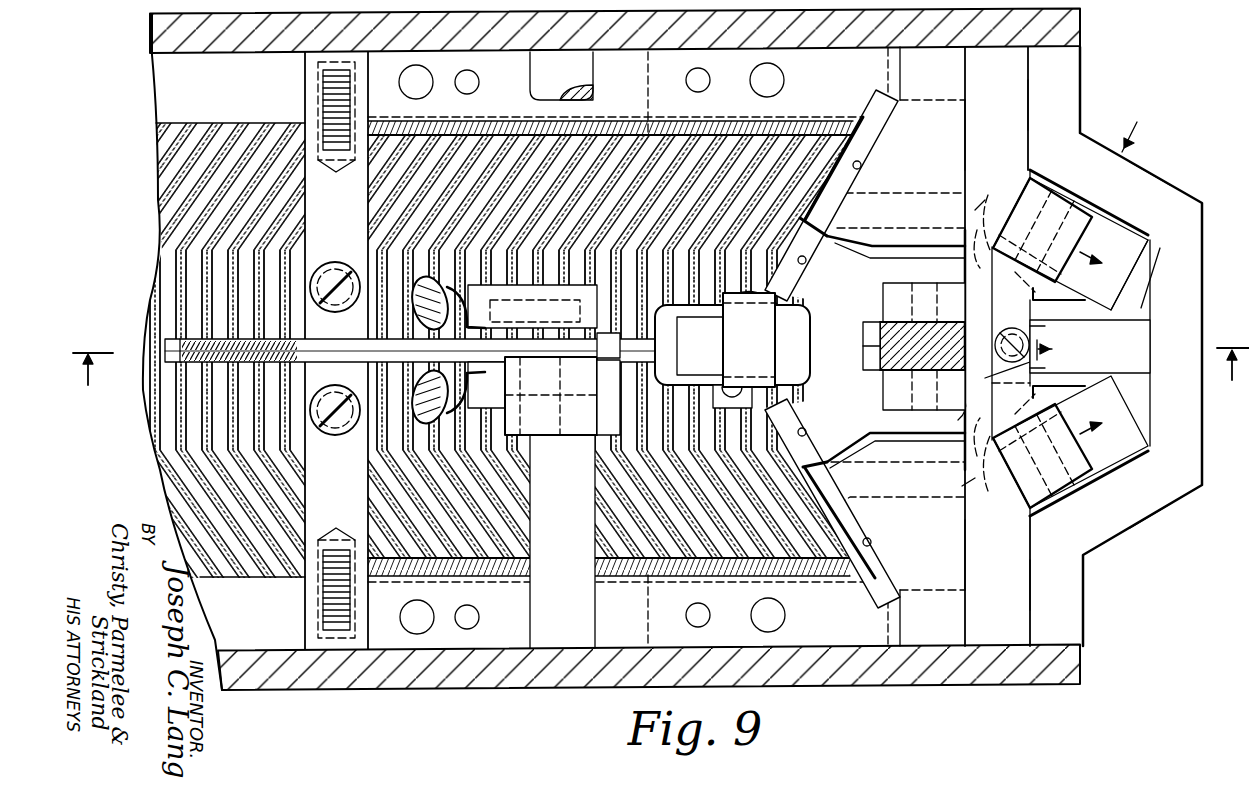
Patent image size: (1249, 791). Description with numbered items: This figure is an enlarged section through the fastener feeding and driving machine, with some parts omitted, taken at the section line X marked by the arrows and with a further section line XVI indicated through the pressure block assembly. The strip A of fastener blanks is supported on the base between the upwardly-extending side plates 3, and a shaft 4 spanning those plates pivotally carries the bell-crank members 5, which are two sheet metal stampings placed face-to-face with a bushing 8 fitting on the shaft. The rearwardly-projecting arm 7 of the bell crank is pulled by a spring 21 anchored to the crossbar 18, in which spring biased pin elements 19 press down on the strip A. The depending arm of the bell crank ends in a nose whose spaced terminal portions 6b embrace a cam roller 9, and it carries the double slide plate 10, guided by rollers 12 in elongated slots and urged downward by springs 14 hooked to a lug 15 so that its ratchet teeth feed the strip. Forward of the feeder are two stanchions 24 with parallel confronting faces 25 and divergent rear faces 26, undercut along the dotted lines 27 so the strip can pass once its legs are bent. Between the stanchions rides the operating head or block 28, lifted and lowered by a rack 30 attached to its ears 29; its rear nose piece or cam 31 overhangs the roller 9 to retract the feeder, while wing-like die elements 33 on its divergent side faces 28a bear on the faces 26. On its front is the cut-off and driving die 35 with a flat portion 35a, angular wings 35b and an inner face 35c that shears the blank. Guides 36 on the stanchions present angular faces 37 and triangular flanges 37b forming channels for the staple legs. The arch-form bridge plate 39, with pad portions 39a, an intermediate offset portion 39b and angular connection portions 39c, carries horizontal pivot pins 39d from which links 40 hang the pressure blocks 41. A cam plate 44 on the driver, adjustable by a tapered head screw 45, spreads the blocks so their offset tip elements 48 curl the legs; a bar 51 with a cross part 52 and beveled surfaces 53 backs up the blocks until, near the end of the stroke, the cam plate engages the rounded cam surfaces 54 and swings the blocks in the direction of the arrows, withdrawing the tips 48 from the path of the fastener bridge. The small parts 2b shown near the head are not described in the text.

The strip A is at (165, 270).
The section line X is at (661, 377).
The section line XVI is at (1106, 241).
The flange 2b is at (840, 236).
The side plates 3 is at (617, 42).
The shaft 4 is at (536, 66).
The bell-crank members 5 is at (606, 355).
The spaced terminal portions 6b is at (750, 284).
The rearwardly-projecting arm 7 is at (385, 364).
The bushing 8 is at (600, 340).
The cam roller 9 is at (702, 346).
The slide plate 10 is at (497, 330).
The rollers 12 is at (500, 320).
The springs 14 is at (425, 326).
The lug 15 is at (415, 285).
The crossbar 18 is at (336, 350).
The spring biased pin elements 19 is at (335, 263).
The spring 21 is at (193, 337).
The uprights or stanchions 24 is at (966, 140).
The parallel confronting faces 25 is at (920, 230).
The outwardly divergent rear faces 26 is at (861, 166).
The undercut 27 is at (890, 196).
The operating head or block 28 is at (902, 337).
The divergent side faces 28a is at (806, 262).
The ears 29 is at (885, 295).
The rack 30 is at (864, 358).
The nose piece or cam 31 is at (768, 345).
The wing-like punch or die elements 33 is at (880, 128).
The cut-off and driving die 35 is at (976, 350).
The flat portion 35a is at (1035, 367).
The angularly projecting wings 35b is at (996, 226).
The inner face 35c is at (958, 405).
The guides 36 is at (1026, 110).
The angular faces 37 is at (999, 212).
The triangular flanges 37b is at (975, 210).
The bridge plate 39 is at (1141, 346).
The pad portions 39a is at (1081, 72).
The intermediate offset portion 39b is at (1204, 336).
The angular connection portions 39c is at (1153, 178).
The horizontal pivot pin 39d is at (1054, 184).
The links 40 is at (1051, 343).
The pressure block 41 is at (1108, 226).
The cam plate 44 is at (1012, 329).
The tapered head screw 45 is at (1036, 326).
The offset tip elements 48 is at (972, 272).
The bar 51 is at (1090, 346).
The cross part 52 is at (1148, 297).
The beveled surfaces 53 is at (1128, 278).
The rounded cam surfaces 54 is at (1052, 292).